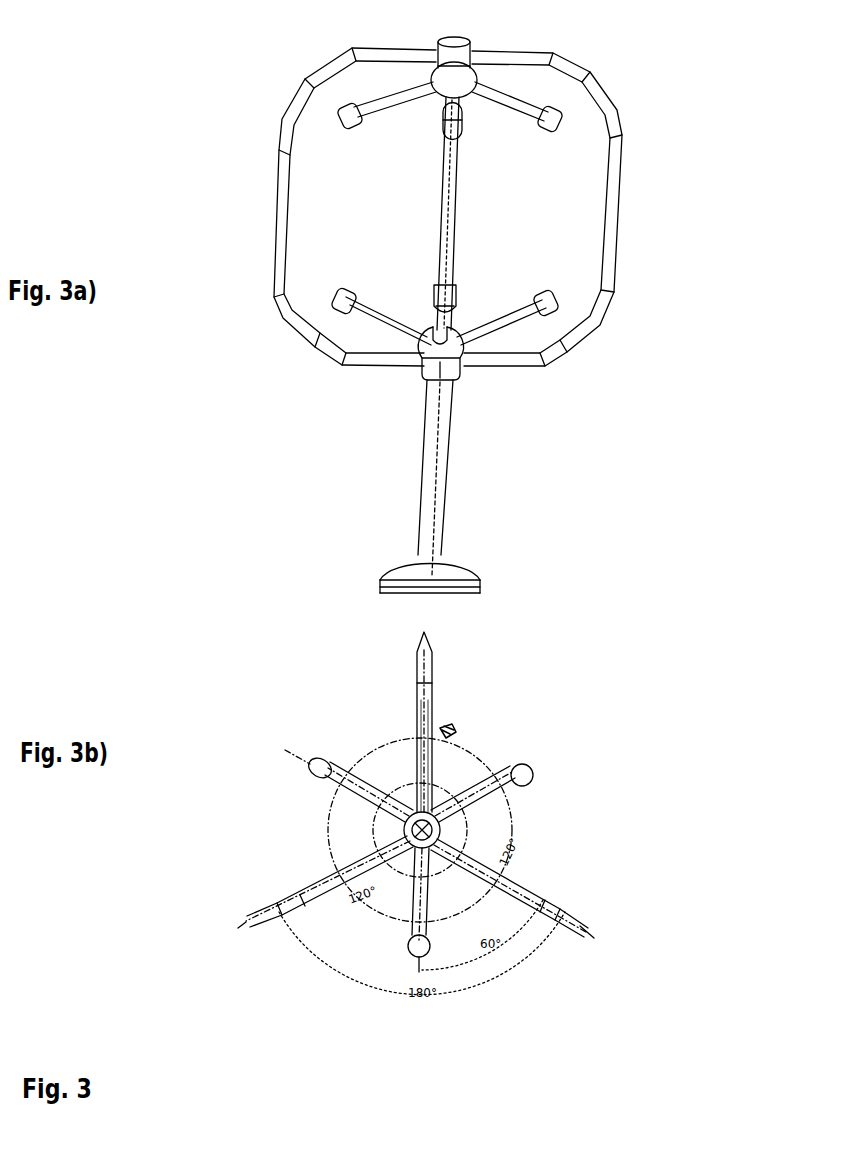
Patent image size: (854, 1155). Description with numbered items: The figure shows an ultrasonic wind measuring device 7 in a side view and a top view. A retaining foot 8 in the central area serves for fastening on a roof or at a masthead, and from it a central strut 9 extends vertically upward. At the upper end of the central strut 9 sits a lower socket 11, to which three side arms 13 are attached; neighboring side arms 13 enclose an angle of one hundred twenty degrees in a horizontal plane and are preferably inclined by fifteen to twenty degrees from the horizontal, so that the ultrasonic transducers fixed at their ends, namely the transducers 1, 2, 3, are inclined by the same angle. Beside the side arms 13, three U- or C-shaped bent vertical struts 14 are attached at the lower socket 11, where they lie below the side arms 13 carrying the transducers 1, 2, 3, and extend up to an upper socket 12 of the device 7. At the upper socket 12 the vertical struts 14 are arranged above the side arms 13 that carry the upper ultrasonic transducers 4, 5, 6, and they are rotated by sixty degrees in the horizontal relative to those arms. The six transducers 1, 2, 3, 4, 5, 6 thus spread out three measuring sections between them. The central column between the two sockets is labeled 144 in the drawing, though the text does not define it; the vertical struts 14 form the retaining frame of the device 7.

In FIG. 3A, the ultrasonic transducer 1 is at (347, 286).
In FIG. 3A, the ultrasonic transducer 2 is at (454, 292).
In FIG. 3A, the ultrasonic transducer 3 is at (550, 291).
In FIG. 3A, the ultrasonic transducer 4 is at (546, 132).
In FIG. 3B, the ultrasonic transducer 4 is at (530, 766).
In FIG. 3A, the ultrasonic transducer 5 is at (440, 132).
In FIG. 3B, the ultrasonic transducer 5 is at (412, 955).
In FIG. 3A, the ultrasonic transducer 6 is at (346, 128).
In FIG. 3B, the ultrasonic transducer 6 is at (326, 760).
In FIG. 3A, the ultrasonic wind measuring device 7 is at (670, 102).
In FIG. 3A, the retaining foot 8 is at (452, 565).
In FIG. 3A, the central strut 9 is at (448, 478).
In FIG. 3A, the lower socket 11 is at (452, 368).
In FIG. 3A, the upper socket 12 is at (468, 66).
In FIG. 3B, the upper socket 12 is at (434, 816).
In FIG. 3A, the side arms 13 is at (396, 100).
In FIG. 3A, the bent vertical struts 14 is at (278, 200).
In FIG. 3B, the bent vertical struts 14 is at (437, 694).
In FIG. 3A, the central column 144 is at (450, 206).